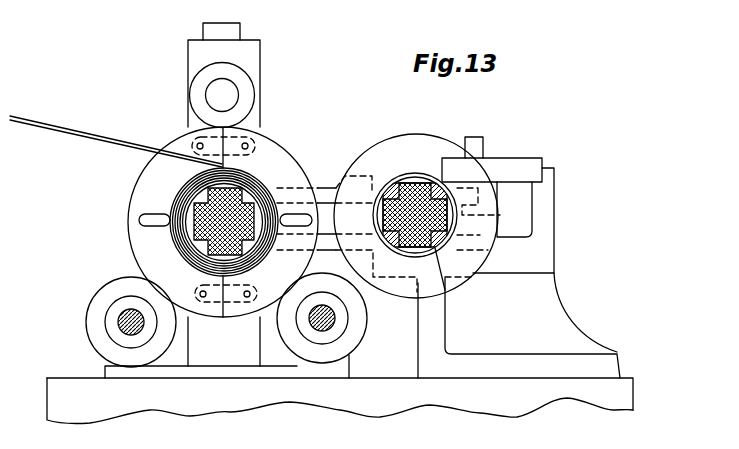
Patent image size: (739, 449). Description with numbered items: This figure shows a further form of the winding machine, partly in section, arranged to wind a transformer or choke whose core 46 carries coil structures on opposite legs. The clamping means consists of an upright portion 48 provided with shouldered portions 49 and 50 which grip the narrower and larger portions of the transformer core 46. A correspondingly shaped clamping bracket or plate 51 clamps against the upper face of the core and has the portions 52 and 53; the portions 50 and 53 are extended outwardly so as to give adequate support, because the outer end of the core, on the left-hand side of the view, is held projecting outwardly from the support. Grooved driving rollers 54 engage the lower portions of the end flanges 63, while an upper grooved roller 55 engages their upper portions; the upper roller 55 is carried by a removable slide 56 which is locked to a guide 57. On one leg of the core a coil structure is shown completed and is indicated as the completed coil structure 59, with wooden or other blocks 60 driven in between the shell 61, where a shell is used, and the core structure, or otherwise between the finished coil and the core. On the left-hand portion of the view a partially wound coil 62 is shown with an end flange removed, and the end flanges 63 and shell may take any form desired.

The core 46 is at (411, 182).
The upright portion 48 is at (549, 310).
The shouldered portion 49 is at (478, 248).
The shouldered portion 50 is at (376, 254).
The clamping bracket or plate 51 is at (514, 160).
The portion of clamping bracket 52 is at (515, 209).
The portion of clamping bracket 53 is at (328, 188).
The grooved driving rollers 54 is at (86, 318).
The upper grooved roller 55 is at (249, 72).
The removable slide 56 is at (189, 62).
The guide 57 is at (232, 31).
The completed coil structure 59 is at (466, 288).
The blocks 60 is at (432, 183).
The shell 61 is at (445, 290).
The partially wound coil 62 is at (170, 234).
The end flanges 63 is at (131, 191).